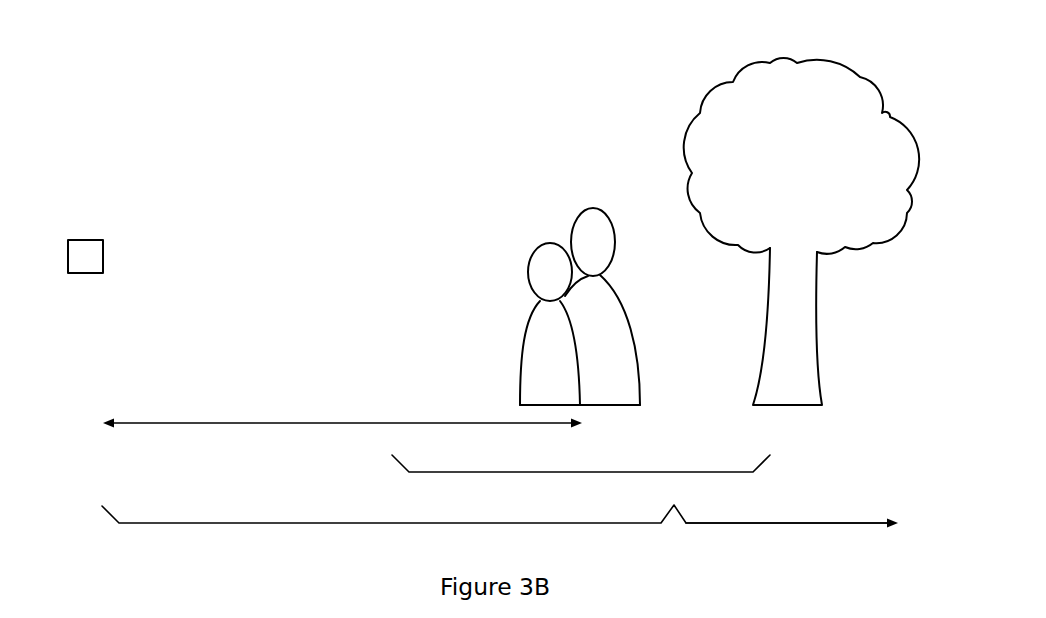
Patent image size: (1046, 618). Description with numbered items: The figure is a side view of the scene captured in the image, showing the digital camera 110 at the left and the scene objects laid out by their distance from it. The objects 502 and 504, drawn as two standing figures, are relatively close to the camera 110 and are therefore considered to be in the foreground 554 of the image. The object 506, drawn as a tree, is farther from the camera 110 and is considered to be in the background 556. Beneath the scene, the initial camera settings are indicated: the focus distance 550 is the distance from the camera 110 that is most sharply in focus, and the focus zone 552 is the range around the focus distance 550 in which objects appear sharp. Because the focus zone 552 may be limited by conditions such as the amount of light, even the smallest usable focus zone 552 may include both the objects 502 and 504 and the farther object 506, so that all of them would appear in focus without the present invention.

The digital camera 110 is at (83, 240).
The object 502 is at (640, 350).
The object 504 is at (523, 354).
The object 506 is at (771, 62).
The focus distance 550 is at (358, 423).
The focus zone 552 is at (581, 472).
The foreground 554 is at (387, 523).
The background 556 is at (788, 523).